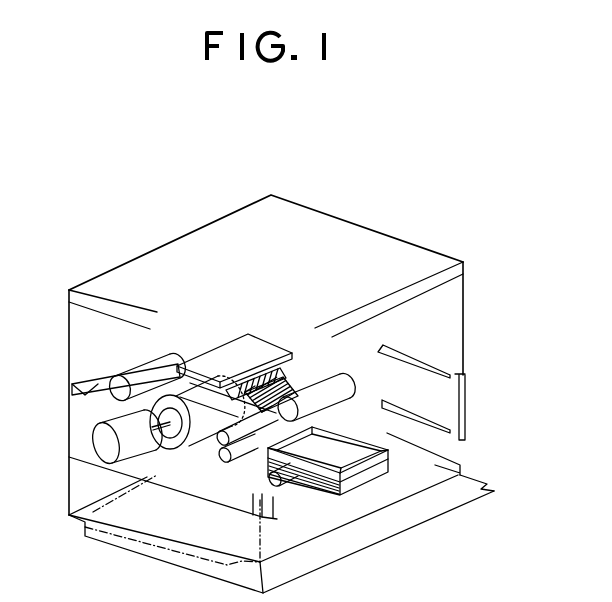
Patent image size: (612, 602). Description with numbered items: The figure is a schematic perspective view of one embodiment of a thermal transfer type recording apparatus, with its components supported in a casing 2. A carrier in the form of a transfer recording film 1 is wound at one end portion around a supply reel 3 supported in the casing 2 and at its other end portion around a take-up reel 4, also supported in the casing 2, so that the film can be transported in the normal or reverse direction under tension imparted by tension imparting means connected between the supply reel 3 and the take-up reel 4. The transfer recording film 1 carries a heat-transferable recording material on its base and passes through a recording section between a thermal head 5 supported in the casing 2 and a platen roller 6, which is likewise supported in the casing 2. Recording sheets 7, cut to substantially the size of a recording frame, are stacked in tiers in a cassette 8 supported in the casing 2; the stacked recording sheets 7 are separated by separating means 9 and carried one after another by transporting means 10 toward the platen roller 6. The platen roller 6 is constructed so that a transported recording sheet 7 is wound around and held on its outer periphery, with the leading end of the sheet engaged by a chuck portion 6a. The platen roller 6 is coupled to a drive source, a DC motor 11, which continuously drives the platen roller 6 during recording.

The transfer recording film 1 is at (288, 383).
The casing 2 is at (465, 302).
The supply reel 3 is at (346, 380).
The take-up reel 4 is at (130, 358).
The thermal head 5 is at (220, 347).
The platen roller 6 is at (195, 449).
The chuck portion 6a is at (150, 398).
The recording sheets 7 is at (348, 455).
The cassette 8 is at (338, 497).
The separating means 9 is at (281, 487).
The transporting means 10 is at (226, 463).
The DC motor 11 is at (104, 456).